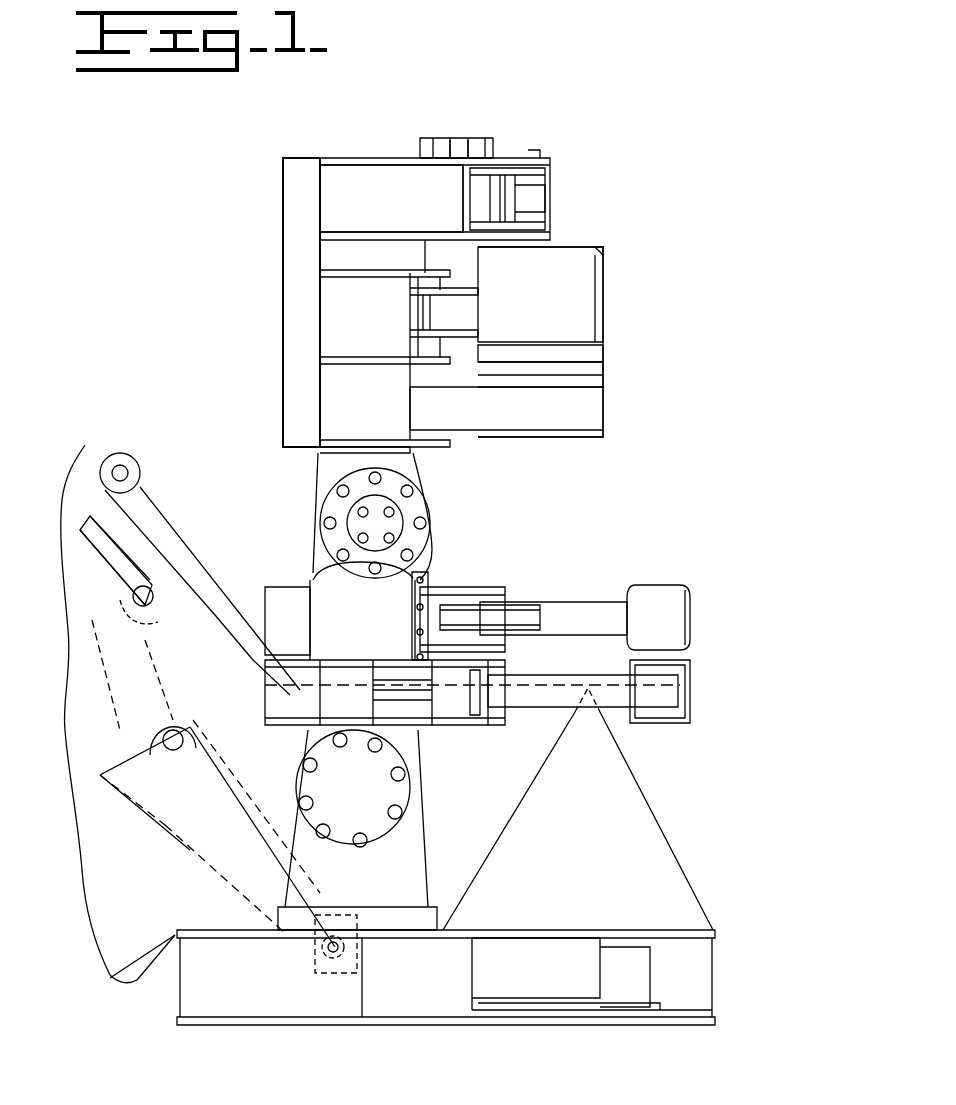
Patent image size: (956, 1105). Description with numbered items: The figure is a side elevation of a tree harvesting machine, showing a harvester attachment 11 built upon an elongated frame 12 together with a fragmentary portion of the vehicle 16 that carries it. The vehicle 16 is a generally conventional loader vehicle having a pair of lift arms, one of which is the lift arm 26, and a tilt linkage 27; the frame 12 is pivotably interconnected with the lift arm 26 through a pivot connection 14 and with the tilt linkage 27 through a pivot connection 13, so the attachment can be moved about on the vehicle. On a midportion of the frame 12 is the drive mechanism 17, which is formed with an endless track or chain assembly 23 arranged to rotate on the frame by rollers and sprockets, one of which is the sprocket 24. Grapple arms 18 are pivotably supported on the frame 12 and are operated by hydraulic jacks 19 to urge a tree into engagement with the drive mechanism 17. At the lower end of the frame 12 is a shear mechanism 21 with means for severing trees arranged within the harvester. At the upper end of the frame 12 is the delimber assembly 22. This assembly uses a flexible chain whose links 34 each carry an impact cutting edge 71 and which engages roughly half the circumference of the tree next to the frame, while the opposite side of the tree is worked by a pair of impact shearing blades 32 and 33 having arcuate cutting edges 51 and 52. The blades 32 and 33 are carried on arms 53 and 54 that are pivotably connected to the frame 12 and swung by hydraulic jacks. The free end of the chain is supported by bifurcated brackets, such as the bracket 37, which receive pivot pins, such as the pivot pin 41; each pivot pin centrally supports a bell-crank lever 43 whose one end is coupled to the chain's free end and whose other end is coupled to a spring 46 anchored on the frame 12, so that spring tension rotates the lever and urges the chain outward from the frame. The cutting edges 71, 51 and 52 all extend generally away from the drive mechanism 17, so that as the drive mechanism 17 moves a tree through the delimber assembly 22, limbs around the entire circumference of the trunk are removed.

The harvester attachment 11 is at (262, 164).
The elongated frame 12 is at (325, 474).
The pivot connection 13 is at (262, 733).
The pivot connection 14 is at (320, 960).
The vehicle 16 is at (106, 432).
The drive mechanism 17 is at (480, 580).
The grapple arms 18 is at (695, 672).
The hydraulic jacks 19 is at (400, 670).
The shear mechanism 21 is at (718, 983).
The delimber assembly 22 is at (700, 302).
The endless track or chain assembly 23 is at (426, 575).
The sprocket 24 is at (285, 800).
The lift arm 26 is at (180, 797).
The tilt linkage 27 is at (134, 452).
The impact shearing blade 32 is at (540, 294).
The impact shearing blade 33 is at (600, 375).
The links 34 is at (440, 150).
The bracket 37 is at (395, 232).
The pivot pin 41 is at (535, 190).
The lever 43 is at (540, 210).
The spring 46 is at (475, 195).
The arcuate cutting edge 51 is at (603, 258).
The arcuate cutting edge 52 is at (598, 355).
The arm 53 is at (444, 356).
The arm 54 is at (506, 412).
The impact cutting edge 71 is at (460, 150).